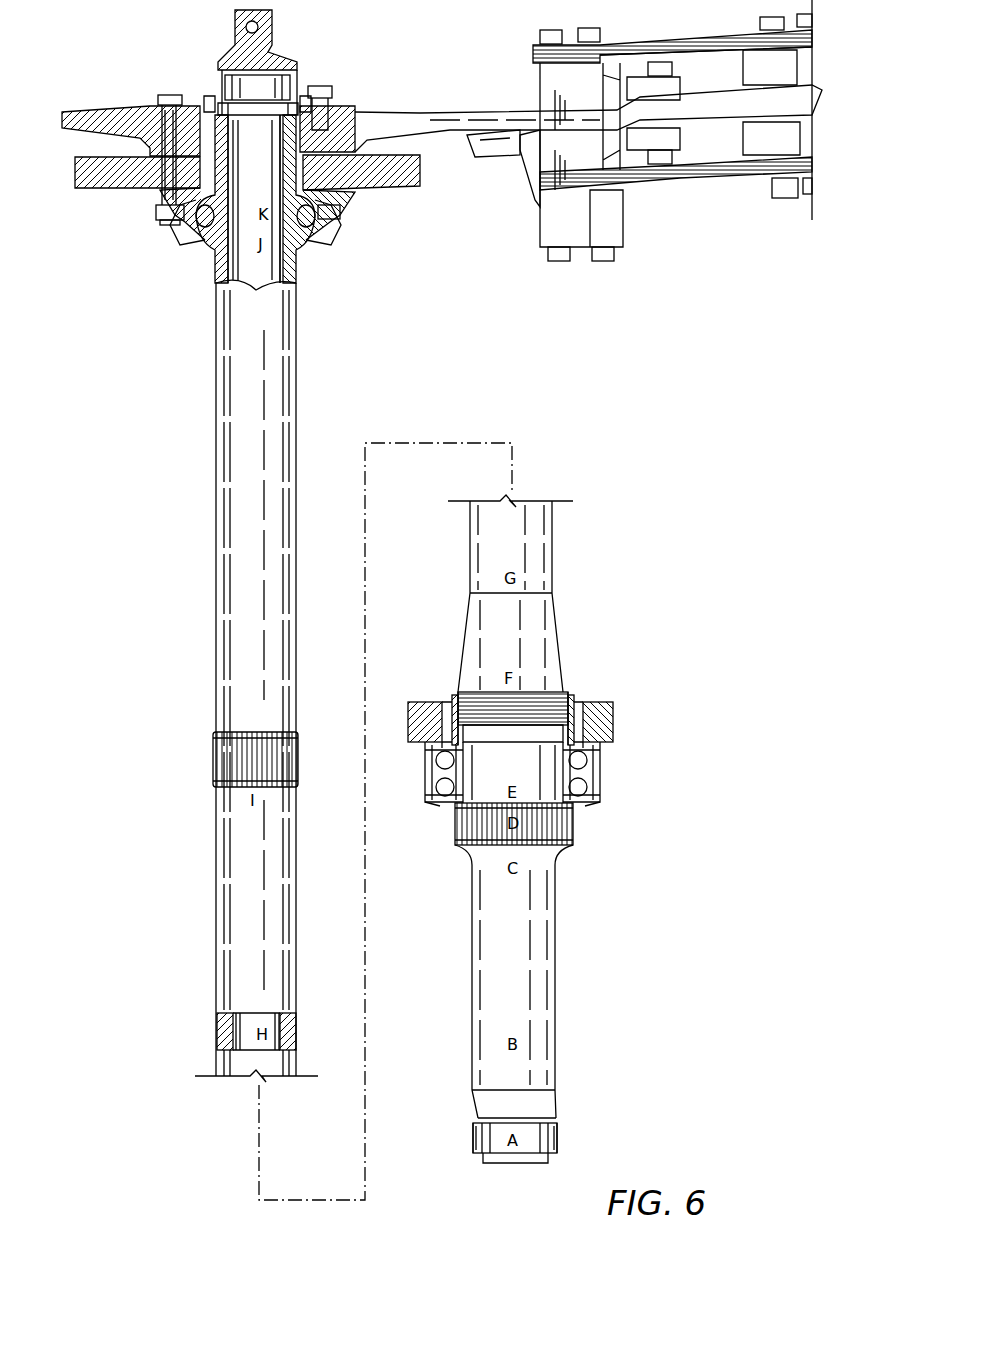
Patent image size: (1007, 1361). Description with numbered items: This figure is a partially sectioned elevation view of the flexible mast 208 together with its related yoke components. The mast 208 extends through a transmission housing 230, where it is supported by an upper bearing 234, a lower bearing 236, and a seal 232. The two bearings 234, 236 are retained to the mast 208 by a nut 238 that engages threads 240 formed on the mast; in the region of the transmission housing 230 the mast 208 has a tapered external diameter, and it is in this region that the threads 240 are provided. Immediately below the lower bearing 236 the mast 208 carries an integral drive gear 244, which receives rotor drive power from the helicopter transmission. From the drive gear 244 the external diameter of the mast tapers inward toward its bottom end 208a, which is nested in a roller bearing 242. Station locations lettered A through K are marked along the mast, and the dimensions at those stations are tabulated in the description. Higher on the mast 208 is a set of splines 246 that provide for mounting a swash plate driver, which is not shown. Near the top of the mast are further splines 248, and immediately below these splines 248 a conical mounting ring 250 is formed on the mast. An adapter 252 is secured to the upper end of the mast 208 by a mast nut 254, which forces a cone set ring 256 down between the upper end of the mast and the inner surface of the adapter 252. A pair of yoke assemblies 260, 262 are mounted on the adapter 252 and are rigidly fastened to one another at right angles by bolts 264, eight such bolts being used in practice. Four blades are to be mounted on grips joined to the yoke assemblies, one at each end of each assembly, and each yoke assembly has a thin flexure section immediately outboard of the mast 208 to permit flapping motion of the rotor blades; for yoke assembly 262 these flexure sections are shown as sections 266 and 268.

The flexible mast 208 is at (240, 495).
The bottom end 208a is at (515, 1163).
The transmission housing 230 is at (615, 722).
The seal 232 is at (578, 720).
The bearing 234 is at (590, 758).
The bearing 236 is at (590, 786).
The nut 238 is at (575, 712).
The threads 240 is at (545, 706).
The roller bearing 242 is at (555, 1138).
The integral drive gear 244 is at (548, 824).
The splines 246 is at (237, 757).
The splines 248 is at (287, 178).
The conical mounting ring 250 is at (207, 245).
The adapter 252 is at (345, 205).
The mast nut 254 is at (258, 40).
The cone set ring 256 is at (210, 100).
The yoke assembly 260 is at (395, 178).
The yoke assembly 262 is at (345, 130).
The bolts 264 is at (172, 95).
The flexure section 266 is at (392, 127).
The flexure section 268 is at (115, 125).